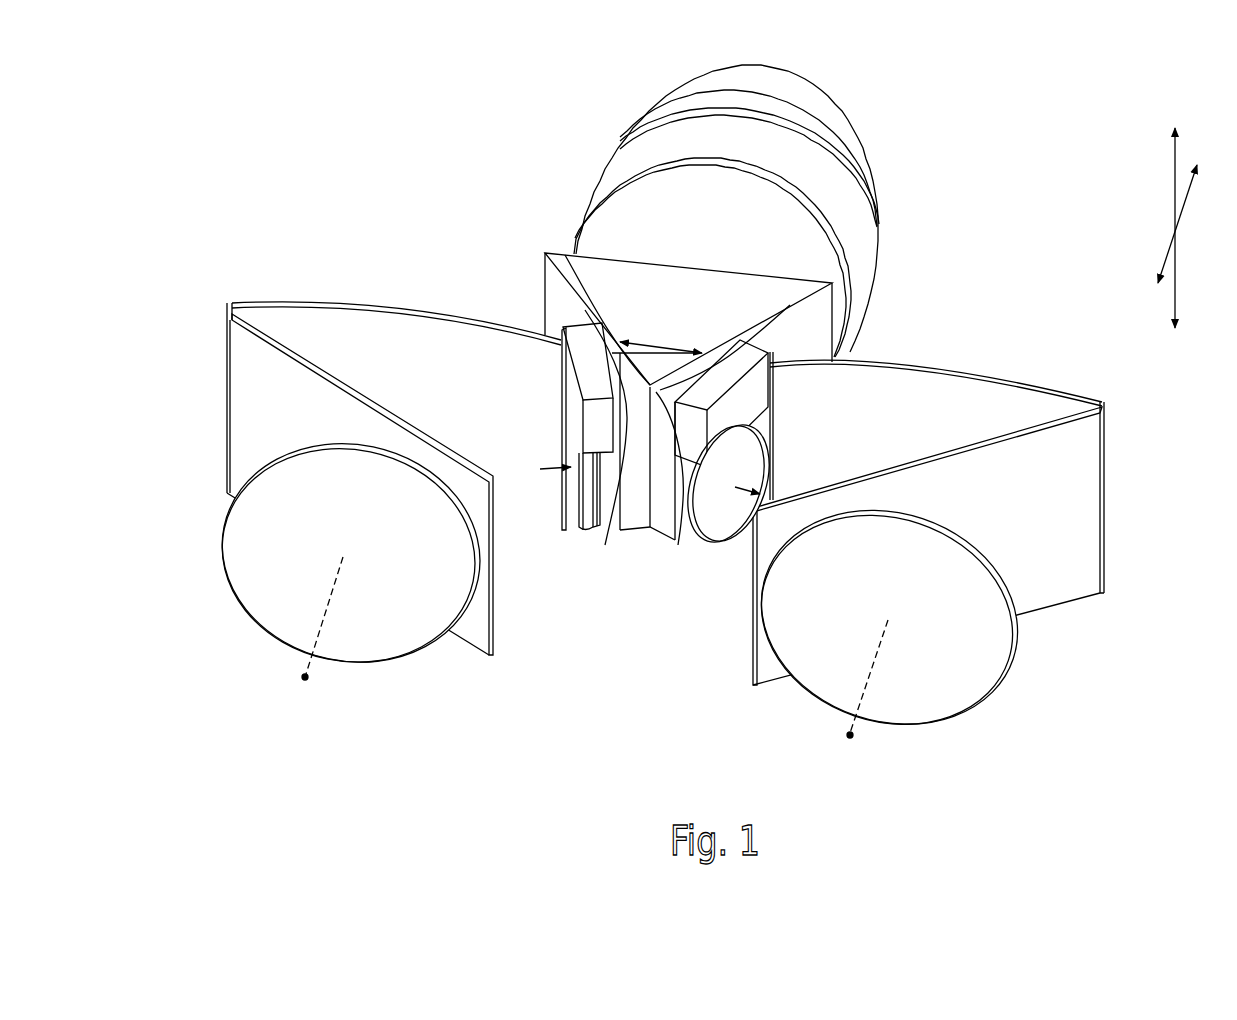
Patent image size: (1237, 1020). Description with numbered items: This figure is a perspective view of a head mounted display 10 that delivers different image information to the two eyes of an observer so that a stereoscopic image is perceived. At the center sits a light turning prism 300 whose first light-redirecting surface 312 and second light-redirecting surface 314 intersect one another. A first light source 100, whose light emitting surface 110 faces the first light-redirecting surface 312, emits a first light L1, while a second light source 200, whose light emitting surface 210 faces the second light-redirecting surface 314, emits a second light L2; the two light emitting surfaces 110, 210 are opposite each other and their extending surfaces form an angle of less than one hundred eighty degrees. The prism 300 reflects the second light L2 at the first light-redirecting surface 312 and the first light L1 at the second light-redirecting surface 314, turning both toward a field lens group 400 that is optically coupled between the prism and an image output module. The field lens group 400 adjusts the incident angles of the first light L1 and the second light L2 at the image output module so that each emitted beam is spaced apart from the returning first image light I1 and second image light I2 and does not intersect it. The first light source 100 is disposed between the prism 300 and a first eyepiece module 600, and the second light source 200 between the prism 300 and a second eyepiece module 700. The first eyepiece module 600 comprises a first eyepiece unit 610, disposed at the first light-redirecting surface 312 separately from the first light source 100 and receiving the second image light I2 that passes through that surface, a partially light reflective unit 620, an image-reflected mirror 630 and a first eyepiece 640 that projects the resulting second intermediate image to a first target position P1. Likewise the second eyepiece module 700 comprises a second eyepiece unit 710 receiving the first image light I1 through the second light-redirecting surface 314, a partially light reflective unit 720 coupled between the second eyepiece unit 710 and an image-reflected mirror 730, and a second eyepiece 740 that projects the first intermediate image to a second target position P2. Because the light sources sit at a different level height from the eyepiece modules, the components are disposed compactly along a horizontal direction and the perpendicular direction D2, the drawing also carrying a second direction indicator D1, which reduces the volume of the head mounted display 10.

The head mounted display 10 is at (176, 60).
The first light source 100 is at (582, 344).
The light emitting surface 110 is at (595, 500).
The second light source 200 is at (742, 356).
The light emitting surface 210 is at (705, 512).
The light turning prism 300 is at (748, 354).
The first light-redirecting surface 312 is at (560, 246).
The second light-redirecting surface 314 is at (790, 305).
The field lens group 400 is at (618, 149).
The first eyepiece module 600 is at (323, 463).
The first eyepiece unit 610 is at (564, 512).
The partially light reflective unit 620 is at (243, 405).
The image-reflected mirror 630 is at (330, 316).
The first eyepiece 640 is at (245, 521).
The second eyepiece module 700 is at (971, 542).
The second eyepiece unit 710 is at (738, 515).
The partially light reflective unit 720 is at (1086, 530).
The image-reflected mirror 730 is at (1012, 401).
The second eyepiece 740 is at (988, 660).
The first light L1 is at (616, 341).
The second light L2 is at (706, 352).
The first image light I1 is at (735, 487).
The second image light I2 is at (540, 469).
The first target position P1 is at (314, 633).
The second target position P2 is at (861, 695).
The first direction D1 is at (1179, 224).
The perpendicular direction D2 is at (1176, 229).